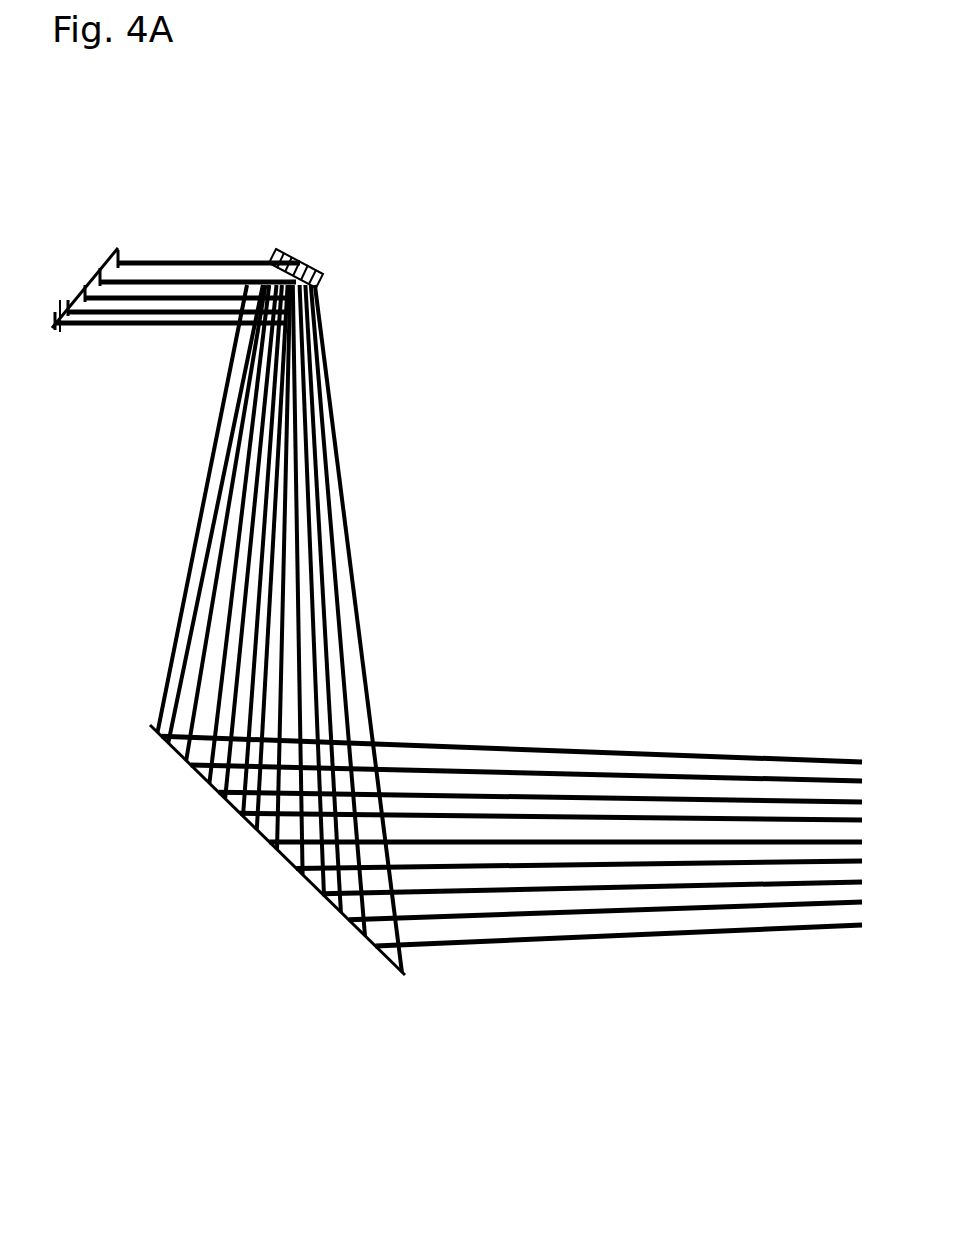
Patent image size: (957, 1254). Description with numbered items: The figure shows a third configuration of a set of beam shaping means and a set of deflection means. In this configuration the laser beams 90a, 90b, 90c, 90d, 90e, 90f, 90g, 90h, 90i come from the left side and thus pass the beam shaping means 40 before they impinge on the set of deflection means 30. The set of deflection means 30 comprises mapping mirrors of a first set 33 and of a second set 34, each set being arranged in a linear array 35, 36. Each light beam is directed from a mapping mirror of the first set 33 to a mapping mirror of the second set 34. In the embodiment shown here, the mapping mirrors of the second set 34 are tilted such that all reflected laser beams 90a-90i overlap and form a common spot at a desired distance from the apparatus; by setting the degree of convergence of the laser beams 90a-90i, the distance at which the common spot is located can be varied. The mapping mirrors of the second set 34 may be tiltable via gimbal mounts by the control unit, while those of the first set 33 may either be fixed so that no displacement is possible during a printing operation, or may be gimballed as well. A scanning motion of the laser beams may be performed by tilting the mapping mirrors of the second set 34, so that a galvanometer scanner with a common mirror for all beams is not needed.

The set of deflection means 30 is at (442, 328).
The beam shaping means 40 is at (122, 240).
The first set of mapping mirrors 33 is at (347, 234).
The linear array 35 is at (318, 246).
The second set of mapping mirrors 34 is at (320, 891).
The linear array 36 is at (410, 990).
The laser beam 90a is at (768, 753).
The laser beam 90b is at (712, 777).
The laser beam 90c is at (638, 800).
The laser beam 90d is at (533, 817).
The laser beam 90e is at (847, 840).
The laser beam 90f is at (547, 867).
The laser beam 90g is at (585, 893).
The laser beam 90h is at (693, 905).
The laser beam 90i is at (812, 928).